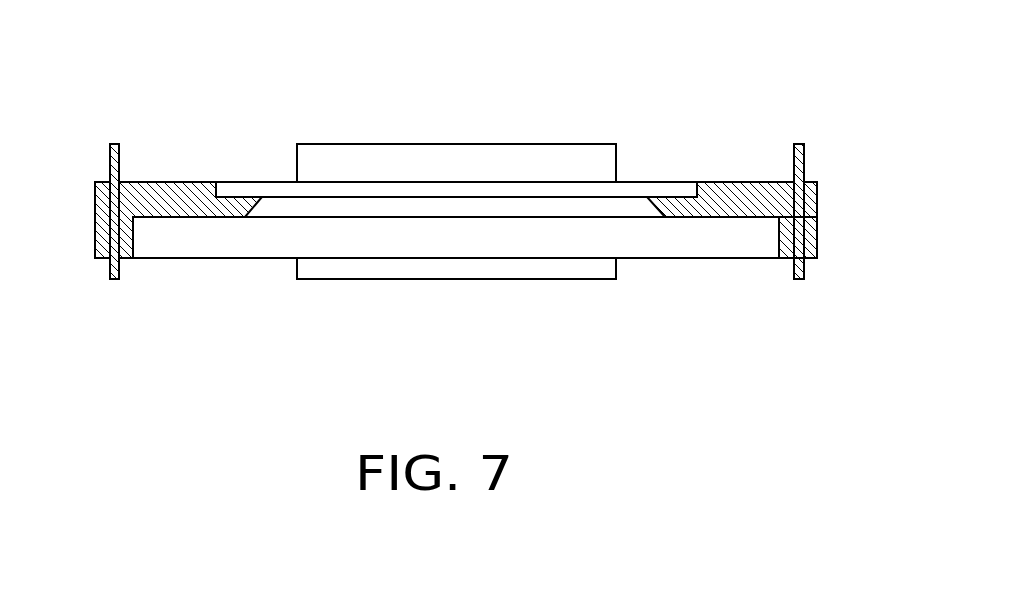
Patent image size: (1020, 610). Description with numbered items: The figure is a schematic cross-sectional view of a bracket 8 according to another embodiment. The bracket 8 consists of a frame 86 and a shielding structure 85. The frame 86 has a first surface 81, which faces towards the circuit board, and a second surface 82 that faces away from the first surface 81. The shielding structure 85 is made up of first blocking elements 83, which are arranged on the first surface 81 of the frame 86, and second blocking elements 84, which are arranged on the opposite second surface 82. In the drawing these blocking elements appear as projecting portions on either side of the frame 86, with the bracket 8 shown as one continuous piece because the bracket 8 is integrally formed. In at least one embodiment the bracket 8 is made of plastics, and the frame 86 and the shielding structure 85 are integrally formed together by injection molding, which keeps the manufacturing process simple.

The bracket 8 is at (502, 52).
The first surface 81 is at (473, 257).
The second surface 82 is at (713, 181).
The first blocking elements 83 is at (806, 258).
The second blocking elements 84 is at (493, 157).
The shielding structure 85 is at (877, 150).
The frame 86 is at (95, 215).